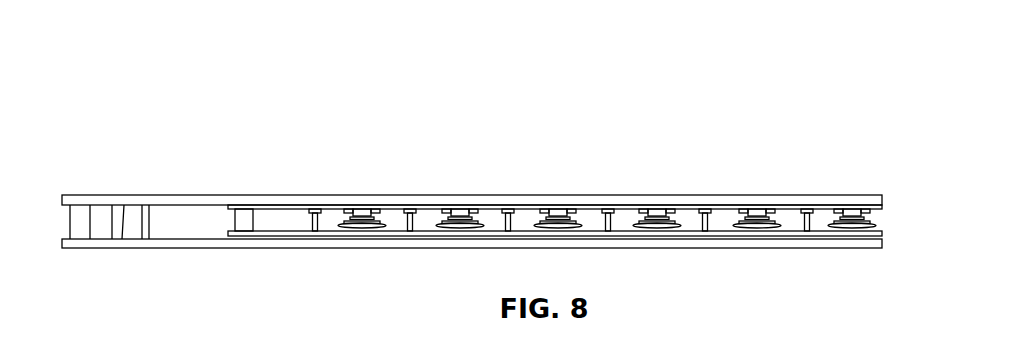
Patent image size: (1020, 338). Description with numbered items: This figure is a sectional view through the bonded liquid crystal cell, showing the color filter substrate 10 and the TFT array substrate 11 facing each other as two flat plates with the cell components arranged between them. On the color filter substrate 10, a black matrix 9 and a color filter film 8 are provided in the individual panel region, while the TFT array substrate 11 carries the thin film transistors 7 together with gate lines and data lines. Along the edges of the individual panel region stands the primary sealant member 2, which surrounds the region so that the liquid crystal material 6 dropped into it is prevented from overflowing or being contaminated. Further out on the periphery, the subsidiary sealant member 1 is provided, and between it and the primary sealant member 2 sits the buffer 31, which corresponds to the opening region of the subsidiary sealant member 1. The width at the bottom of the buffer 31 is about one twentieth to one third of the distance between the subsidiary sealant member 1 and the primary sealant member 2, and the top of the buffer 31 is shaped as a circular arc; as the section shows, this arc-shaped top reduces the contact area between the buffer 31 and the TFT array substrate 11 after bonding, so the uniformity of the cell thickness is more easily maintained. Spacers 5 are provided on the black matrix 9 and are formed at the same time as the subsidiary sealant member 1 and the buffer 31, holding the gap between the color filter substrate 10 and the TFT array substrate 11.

The subsidiary sealant member 1 is at (83, 220).
The buffer 31 is at (118, 212).
The spacers 5 is at (147, 218).
The primary sealant member 2 is at (247, 218).
The color filter substrate 10 is at (395, 202).
The liquid crystal material 6 is at (473, 213).
The TFT array substrate 11 is at (563, 243).
The color filter film 8 is at (723, 210).
The black matrix 9 is at (773, 213).
The thin film transistors 7 is at (793, 237).